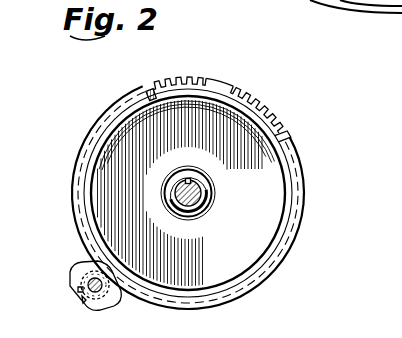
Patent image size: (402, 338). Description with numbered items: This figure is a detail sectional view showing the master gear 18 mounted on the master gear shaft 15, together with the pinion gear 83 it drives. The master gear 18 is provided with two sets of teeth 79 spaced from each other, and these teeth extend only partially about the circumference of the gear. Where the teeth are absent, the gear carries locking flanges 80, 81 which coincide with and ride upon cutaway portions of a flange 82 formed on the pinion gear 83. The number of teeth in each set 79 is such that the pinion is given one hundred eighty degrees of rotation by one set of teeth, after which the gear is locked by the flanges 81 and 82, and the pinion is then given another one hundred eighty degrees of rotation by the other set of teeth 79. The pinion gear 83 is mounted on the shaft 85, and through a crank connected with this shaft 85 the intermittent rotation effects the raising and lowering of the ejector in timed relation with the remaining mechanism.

The master gear shaft 15 is at (204, 201).
The master gear 18 is at (262, 234).
The sets of teeth 79 is at (170, 83).
The locking flange 80 is at (268, 272).
The locking flange 81 is at (222, 85).
The flange 82 is at (72, 266).
The pinion gear 83 is at (78, 289).
The shaft 85 is at (112, 297).